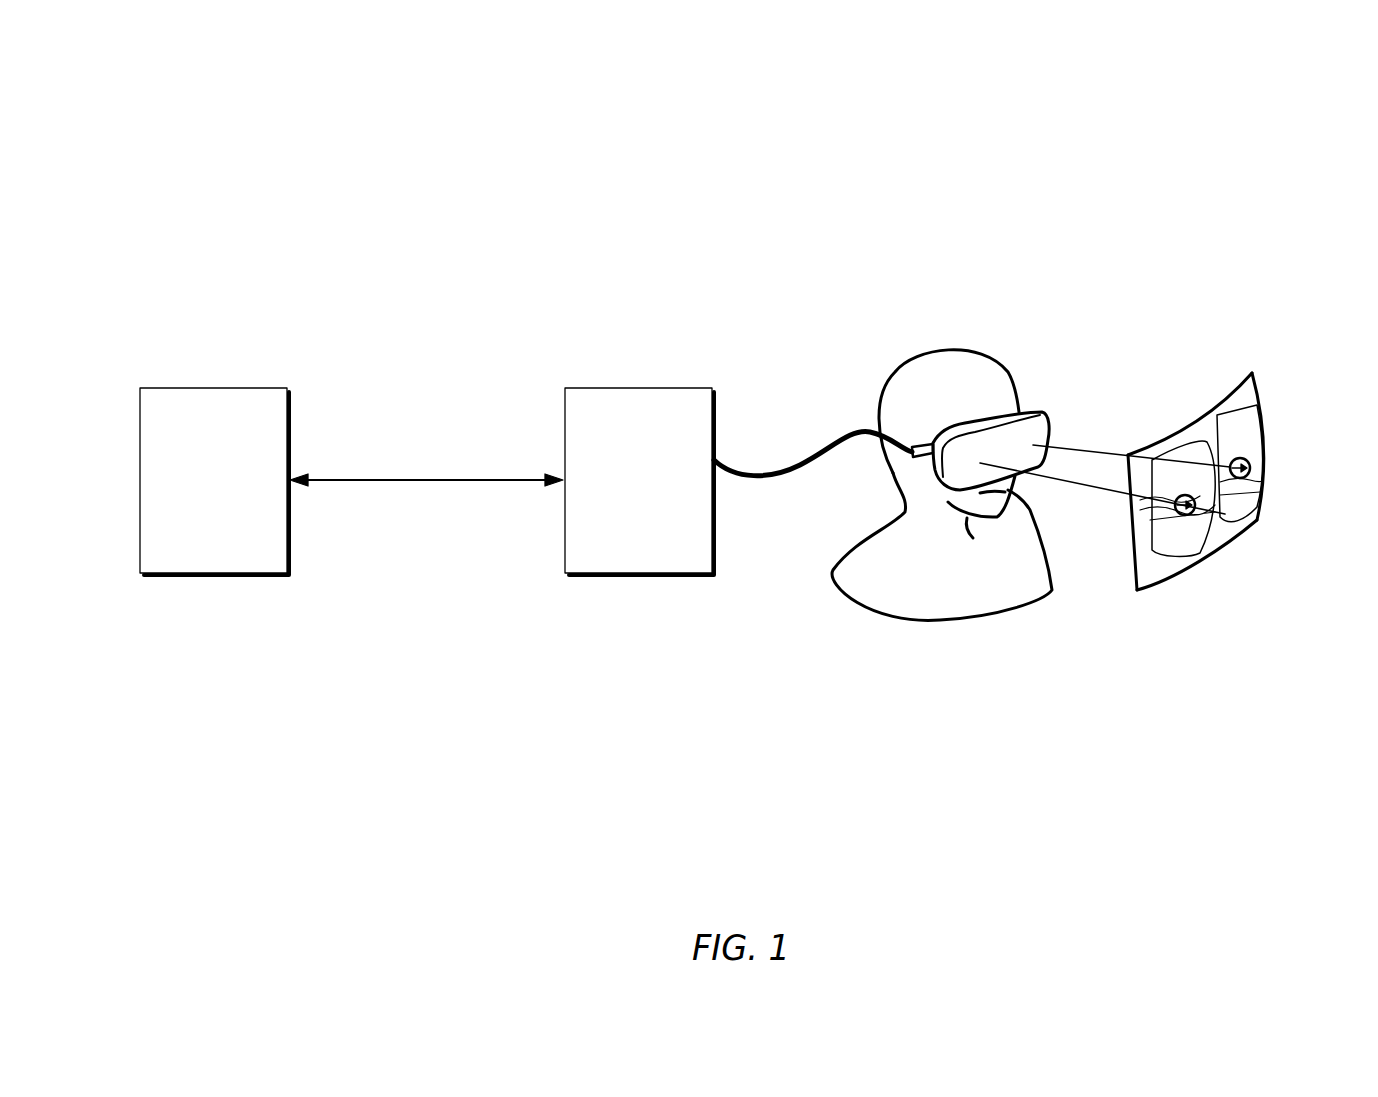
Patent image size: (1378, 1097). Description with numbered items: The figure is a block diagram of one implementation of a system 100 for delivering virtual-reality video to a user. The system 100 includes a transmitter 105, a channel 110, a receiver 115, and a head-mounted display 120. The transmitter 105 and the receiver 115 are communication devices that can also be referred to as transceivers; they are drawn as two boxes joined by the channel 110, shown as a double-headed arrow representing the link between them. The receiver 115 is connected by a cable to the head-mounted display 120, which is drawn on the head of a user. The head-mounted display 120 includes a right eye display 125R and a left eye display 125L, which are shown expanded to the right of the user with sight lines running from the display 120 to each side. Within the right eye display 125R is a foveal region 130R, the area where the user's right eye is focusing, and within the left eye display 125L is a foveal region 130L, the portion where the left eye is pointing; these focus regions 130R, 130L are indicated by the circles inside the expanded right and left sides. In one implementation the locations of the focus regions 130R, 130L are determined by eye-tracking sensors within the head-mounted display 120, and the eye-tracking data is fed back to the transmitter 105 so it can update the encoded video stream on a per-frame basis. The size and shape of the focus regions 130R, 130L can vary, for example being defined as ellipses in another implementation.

The system 100 is at (1292, 94).
The transmitter 105 is at (233, 502).
The channel 110 is at (430, 478).
The receiver 115 is at (658, 502).
The head-mounted display 120 is at (1027, 407).
The left eye display 125L is at (1233, 400).
The right eye display 125R is at (1175, 438).
The foveal region 130L is at (1251, 472).
The foveal region 130R is at (1193, 513).